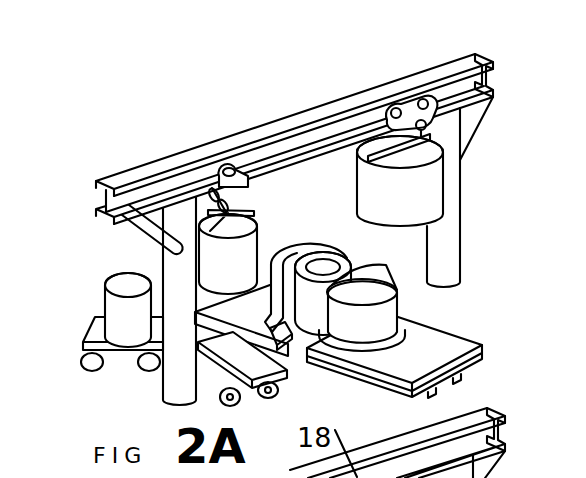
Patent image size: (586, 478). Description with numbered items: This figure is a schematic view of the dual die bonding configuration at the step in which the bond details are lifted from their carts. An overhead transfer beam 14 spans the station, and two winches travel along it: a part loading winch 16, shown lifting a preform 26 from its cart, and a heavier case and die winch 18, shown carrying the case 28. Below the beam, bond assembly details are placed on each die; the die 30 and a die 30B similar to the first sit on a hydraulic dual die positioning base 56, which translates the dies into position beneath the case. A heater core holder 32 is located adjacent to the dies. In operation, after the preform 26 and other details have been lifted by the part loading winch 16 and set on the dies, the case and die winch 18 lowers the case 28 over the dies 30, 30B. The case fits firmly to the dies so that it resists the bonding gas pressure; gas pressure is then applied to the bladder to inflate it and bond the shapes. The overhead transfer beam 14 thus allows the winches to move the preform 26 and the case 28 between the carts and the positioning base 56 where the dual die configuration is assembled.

The overhead transfer beam 14 is at (341, 99).
The part loading winch 16 is at (233, 162).
The case and die winch 18 is at (413, 95).
The preform 26 is at (257, 240).
The case 28 is at (443, 187).
The die 30 is at (447, 309).
The die similar to 30 30B is at (340, 243).
The heater core holder 32 is at (350, 250).
The hydraulic dual die positioning base 56 is at (478, 367).